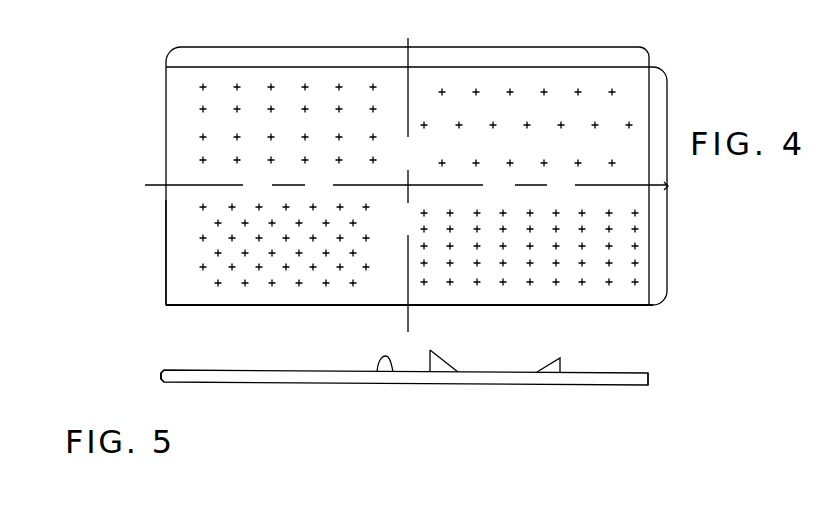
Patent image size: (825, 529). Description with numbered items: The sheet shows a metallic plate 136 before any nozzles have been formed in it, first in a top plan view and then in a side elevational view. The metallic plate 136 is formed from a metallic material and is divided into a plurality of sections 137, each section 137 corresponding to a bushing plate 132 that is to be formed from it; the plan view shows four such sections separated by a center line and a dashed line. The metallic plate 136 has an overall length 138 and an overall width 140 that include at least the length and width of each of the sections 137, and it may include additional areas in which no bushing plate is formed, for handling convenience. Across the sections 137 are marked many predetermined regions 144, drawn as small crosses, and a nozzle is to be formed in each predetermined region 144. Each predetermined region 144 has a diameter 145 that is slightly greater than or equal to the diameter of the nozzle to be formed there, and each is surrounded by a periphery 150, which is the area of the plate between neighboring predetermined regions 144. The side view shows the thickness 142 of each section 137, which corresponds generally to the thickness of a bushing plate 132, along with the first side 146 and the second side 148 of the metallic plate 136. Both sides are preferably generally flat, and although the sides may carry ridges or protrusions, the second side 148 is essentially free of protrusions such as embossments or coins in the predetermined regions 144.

In FIG. 4, the bushing plate 132 is at (338, 305).
In FIG. 4, the metallic plate 136 is at (166, 113).
In FIG. 5, the metallic plate 136 is at (648, 379).
In FIG. 4, the sections 137 is at (173, 286).
In FIG. 4, the overall length 138 is at (404, 173).
In FIG. 4, the overall width 140 is at (439, 187).
In FIG. 5, the thickness 142 is at (161, 376).
In FIG. 4, the predetermined regions 144 is at (203, 160).
In FIG. 5, the predetermined regions 144 is at (555, 416).
In FIG. 4, the diameter 145 is at (210, 85).
In FIG. 5, the first side 146 is at (198, 368).
In FIG. 5, the second side 148 is at (288, 385).
In FIG. 5, the periphery 150 is at (393, 386).